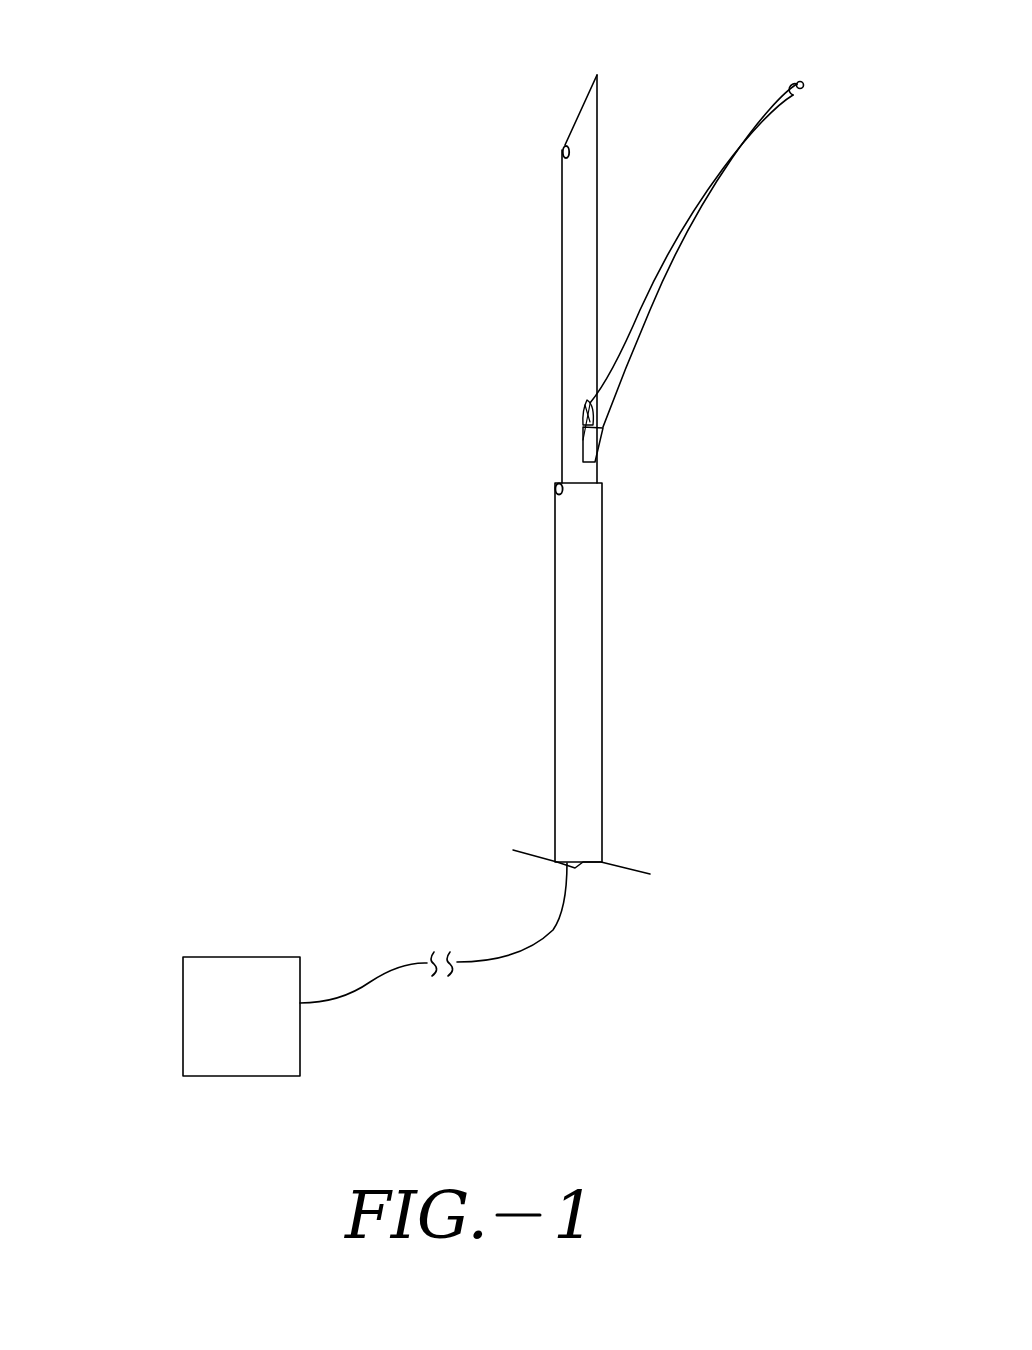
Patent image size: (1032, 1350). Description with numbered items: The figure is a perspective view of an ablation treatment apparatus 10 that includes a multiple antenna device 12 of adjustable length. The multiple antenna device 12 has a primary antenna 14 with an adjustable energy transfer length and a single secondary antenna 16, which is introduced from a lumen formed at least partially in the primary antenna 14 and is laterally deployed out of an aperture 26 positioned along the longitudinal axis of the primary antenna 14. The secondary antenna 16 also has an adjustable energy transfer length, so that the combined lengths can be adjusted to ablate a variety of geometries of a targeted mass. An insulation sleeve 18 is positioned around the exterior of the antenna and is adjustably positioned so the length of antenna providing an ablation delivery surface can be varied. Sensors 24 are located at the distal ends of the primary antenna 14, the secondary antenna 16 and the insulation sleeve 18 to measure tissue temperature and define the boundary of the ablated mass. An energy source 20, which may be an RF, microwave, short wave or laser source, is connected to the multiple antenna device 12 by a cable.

The ablation treatment apparatus 10 is at (200, 578).
The multiple antenna device 12 is at (598, 178).
The primary antenna 14 is at (562, 272).
The secondary antenna 16 is at (683, 253).
The insulation sleeve 18 is at (555, 622).
The energy source 20 is at (252, 957).
The sensor 24 is at (565, 143).
The aperture 26 is at (587, 412).